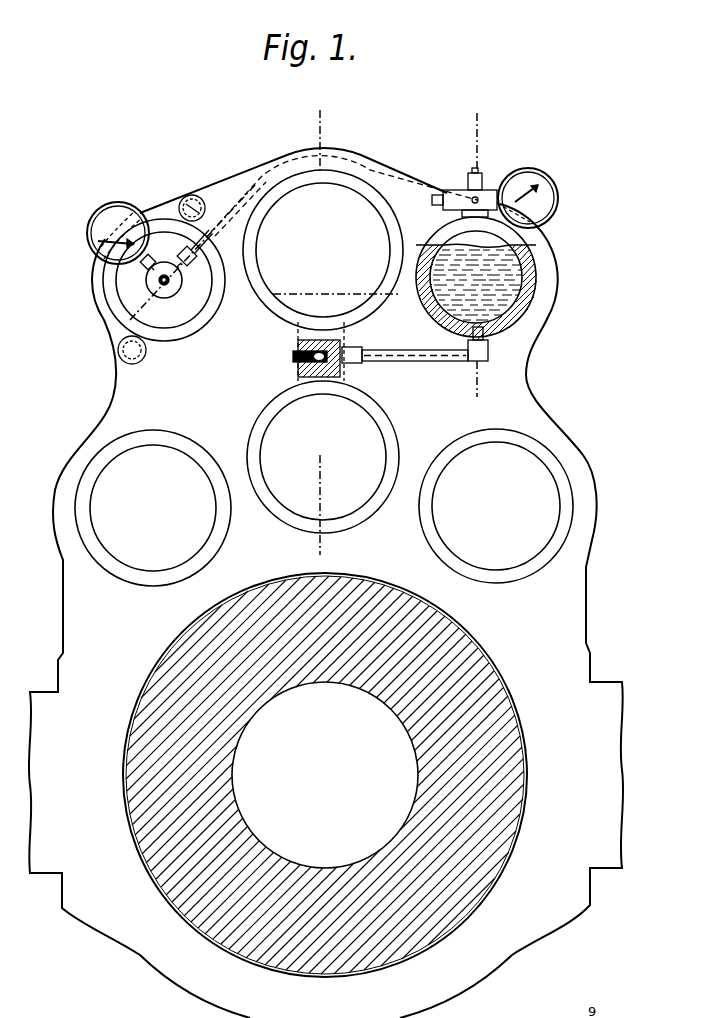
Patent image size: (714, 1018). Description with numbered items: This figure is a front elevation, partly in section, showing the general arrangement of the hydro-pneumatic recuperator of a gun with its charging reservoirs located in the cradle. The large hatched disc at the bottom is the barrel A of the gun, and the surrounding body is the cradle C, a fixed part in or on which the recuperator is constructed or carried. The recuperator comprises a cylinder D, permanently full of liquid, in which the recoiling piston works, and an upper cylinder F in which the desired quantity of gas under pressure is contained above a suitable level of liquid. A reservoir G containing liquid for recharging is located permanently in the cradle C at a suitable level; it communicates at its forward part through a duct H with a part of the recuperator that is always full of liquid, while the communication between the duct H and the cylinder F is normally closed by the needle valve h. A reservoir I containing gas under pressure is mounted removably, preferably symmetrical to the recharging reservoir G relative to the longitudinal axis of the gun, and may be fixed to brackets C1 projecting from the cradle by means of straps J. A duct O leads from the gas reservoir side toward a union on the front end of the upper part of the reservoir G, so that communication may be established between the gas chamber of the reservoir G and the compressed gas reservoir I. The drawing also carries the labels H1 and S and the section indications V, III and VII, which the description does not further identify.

The barrel A is at (480, 683).
The cradle C is at (573, 673).
The brackets C1 is at (92, 443).
The cylinder D is at (368, 441).
The upper cylinder F is at (281, 276).
The reservoir G is at (537, 289).
The duct H is at (418, 358).
The pipe fitting H1 is at (489, 342).
The needle valve h is at (291, 357).
The reservoir I is at (122, 284).
The straps J is at (95, 283).
The duct O is at (381, 173).
The pressure gauge S is at (556, 196).
The section line V- V is at (328, 335).
The section line III- III is at (488, 259).
The section line VII- VII is at (189, 252).